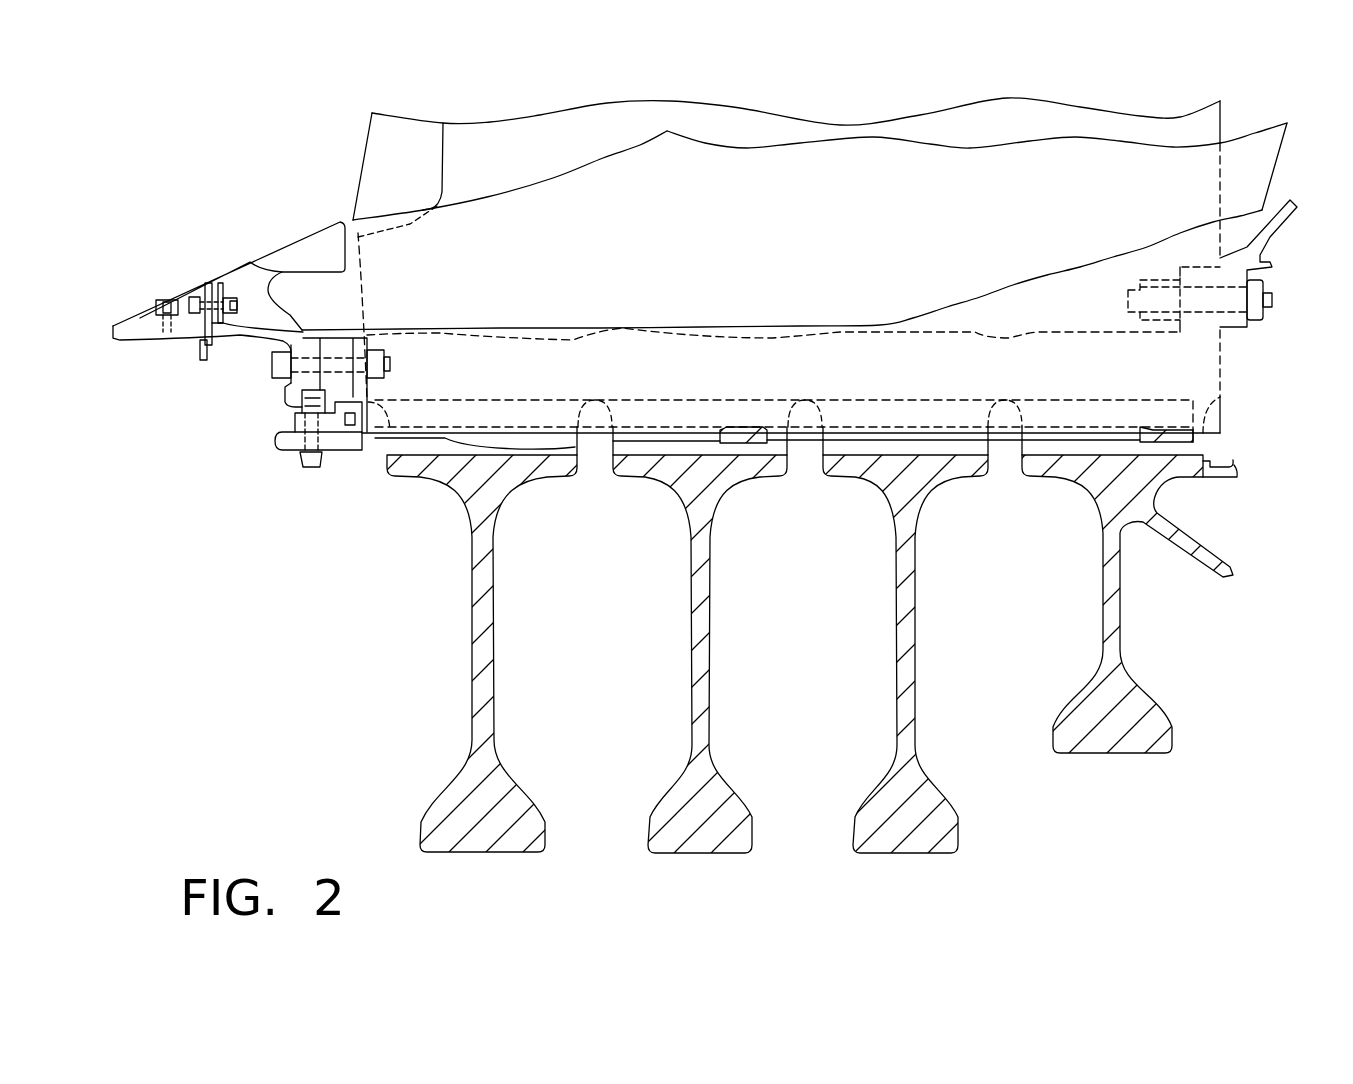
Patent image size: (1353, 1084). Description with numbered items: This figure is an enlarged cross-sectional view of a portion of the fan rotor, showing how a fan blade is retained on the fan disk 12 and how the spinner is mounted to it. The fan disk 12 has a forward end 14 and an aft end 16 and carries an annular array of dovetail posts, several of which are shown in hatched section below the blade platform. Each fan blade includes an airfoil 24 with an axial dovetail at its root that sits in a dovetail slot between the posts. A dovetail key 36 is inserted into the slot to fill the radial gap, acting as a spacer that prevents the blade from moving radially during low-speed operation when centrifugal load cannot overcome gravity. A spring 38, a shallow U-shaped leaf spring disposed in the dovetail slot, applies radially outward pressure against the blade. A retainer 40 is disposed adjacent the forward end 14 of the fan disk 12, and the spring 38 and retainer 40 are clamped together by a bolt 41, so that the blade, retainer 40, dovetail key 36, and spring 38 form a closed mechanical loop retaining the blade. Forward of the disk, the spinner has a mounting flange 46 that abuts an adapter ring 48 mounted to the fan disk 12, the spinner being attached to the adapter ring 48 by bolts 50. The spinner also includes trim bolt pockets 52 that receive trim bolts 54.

The fan disk 12 is at (801, 654).
The forward end 14 is at (373, 465).
The aft end 16 is at (1234, 474).
The airfoil 24 is at (747, 123).
The dovetail key 36 is at (358, 430).
The spring 38 is at (588, 442).
The retainer 40 is at (355, 350).
The bolt 41 is at (312, 462).
The mounting flange 46 is at (230, 300).
The adapter ring 48 is at (320, 242).
The bolts 50 is at (225, 307).
The trim bolt pockets 52 is at (163, 330).
The trim bolts 54 is at (173, 303).